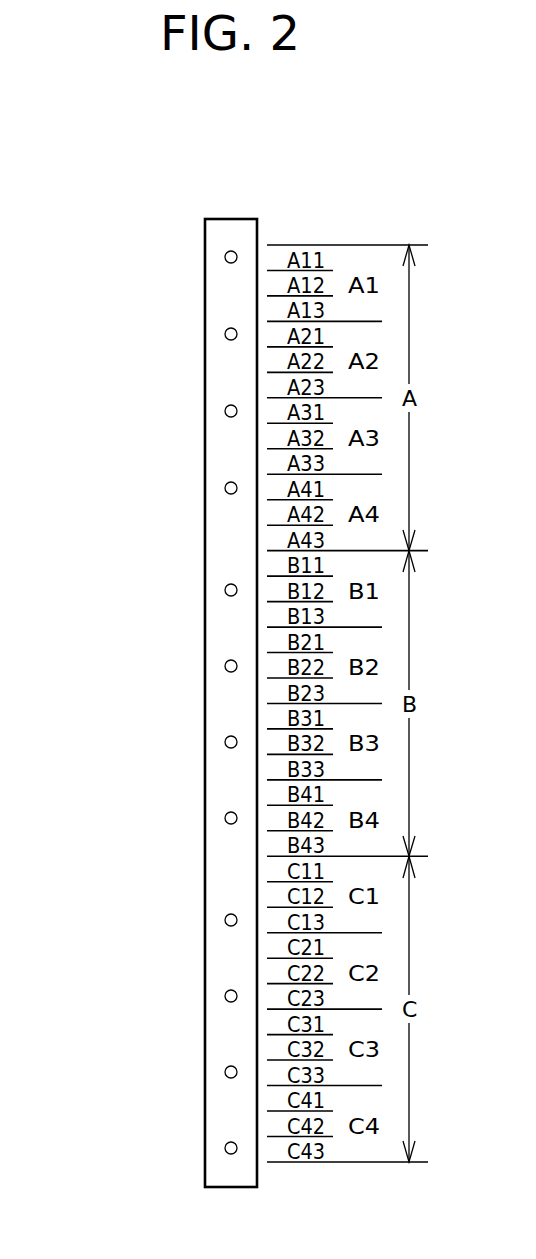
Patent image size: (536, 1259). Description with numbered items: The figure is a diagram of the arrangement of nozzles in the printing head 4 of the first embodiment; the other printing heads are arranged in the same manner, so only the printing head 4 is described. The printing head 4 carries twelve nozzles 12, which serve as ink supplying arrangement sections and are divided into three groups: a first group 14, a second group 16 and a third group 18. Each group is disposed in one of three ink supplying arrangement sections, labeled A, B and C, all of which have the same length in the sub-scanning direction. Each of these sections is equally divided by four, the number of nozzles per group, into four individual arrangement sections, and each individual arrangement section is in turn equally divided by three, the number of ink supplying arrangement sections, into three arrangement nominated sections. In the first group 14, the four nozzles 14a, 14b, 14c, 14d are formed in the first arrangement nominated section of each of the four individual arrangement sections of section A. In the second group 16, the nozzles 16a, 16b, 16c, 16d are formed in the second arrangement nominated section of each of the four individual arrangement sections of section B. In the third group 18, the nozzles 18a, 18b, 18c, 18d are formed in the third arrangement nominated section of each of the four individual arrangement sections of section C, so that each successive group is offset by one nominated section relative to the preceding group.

The printing head 4 is at (238, 204).
The nozzles 12 is at (80, 331).
The first group 14 is at (134, 490).
The nozzle 14a is at (225, 257).
The nozzle 14b is at (225, 334).
The nozzle 14c is at (225, 411).
The nozzle 14d is at (225, 488).
The second group 16 is at (133, 823).
The nozzle 16a is at (225, 590).
The nozzle 16b is at (225, 666).
The nozzle 16c is at (225, 742).
The nozzle 16d is at (225, 818).
The third group 18 is at (133, 1153).
The nozzle 18a is at (225, 920).
The nozzle 18b is at (225, 996).
The nozzle 18c is at (225, 1072).
The nozzle 18d is at (225, 1148).